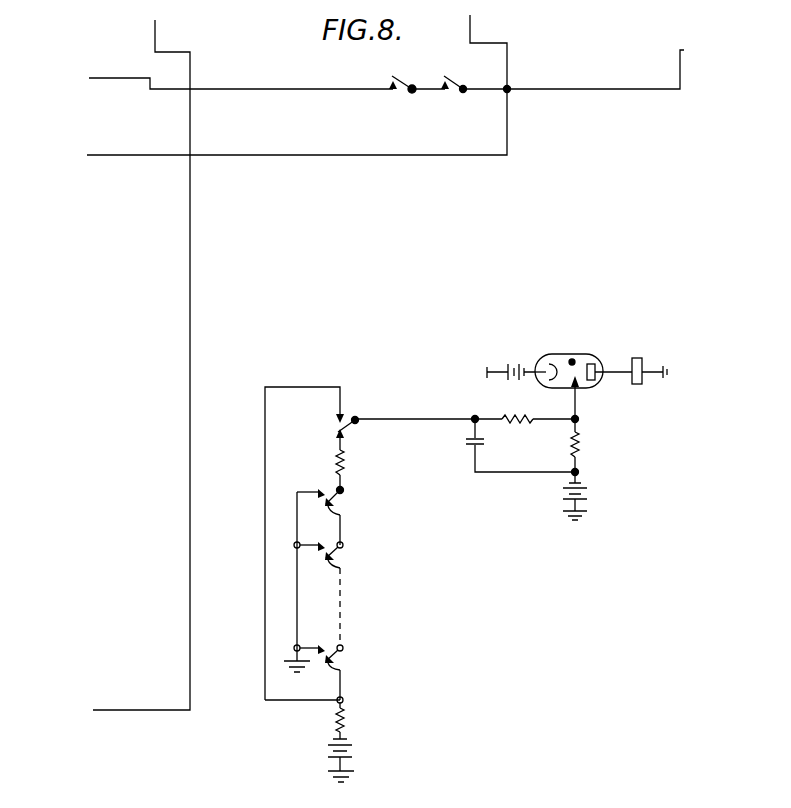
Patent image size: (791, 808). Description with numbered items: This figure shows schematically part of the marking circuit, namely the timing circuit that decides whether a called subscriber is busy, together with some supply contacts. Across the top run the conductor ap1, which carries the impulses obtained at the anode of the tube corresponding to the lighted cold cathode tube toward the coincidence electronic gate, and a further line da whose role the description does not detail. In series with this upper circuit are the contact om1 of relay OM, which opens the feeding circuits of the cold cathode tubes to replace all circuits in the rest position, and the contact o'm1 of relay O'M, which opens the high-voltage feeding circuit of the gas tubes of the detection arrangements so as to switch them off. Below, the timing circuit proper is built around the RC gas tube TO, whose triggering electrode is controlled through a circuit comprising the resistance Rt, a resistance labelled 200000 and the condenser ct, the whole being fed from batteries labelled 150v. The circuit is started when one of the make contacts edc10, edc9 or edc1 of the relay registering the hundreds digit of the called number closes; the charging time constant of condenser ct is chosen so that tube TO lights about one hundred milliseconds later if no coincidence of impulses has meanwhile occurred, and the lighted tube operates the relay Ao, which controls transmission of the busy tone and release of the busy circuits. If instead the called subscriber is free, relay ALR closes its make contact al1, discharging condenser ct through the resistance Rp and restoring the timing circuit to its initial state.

The conductor ap1 is at (386, 365).
The line da is at (297, 85).
The contact of relay OM om1 is at (404, 76).
The contact of relay O'M o'm1 is at (464, 76).
The make contact of relay ALR al1 is at (329, 419).
The resistance Rt is at (352, 462).
The make contact of relay EDC edc10 is at (345, 503).
The make contact of relay EDC edc9 is at (339, 557).
The make contact of relay EDC edc1 is at (339, 660).
The resistance Rp is at (358, 718).
The 150 volt battery 150v is at (463, 565).
The RC gas tube TO is at (583, 377).
The relay Ao is at (647, 361).
The 200000 ohm resistor 200000 is at (525, 409).
The condenser ct is at (520, 445).